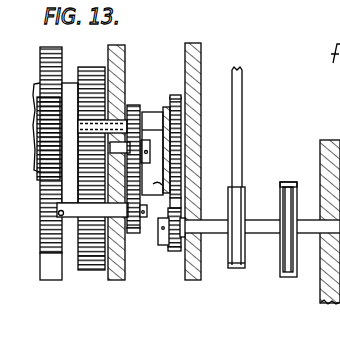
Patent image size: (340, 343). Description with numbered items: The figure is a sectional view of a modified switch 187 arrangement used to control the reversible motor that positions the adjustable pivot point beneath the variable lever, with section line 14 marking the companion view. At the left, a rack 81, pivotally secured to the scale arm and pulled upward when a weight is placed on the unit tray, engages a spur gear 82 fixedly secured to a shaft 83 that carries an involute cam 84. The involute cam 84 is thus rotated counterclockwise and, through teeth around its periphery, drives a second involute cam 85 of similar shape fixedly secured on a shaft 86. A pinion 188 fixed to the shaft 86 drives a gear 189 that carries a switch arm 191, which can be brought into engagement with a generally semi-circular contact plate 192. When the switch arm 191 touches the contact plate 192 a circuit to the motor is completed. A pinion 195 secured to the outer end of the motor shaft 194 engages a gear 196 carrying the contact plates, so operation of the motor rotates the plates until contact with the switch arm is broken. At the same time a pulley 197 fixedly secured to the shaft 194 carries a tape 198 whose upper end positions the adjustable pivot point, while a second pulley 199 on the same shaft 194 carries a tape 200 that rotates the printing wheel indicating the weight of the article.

The section line 14 is at (147, 97).
The rack 81 is at (47, 61).
The spur gear 82 is at (60, 110).
The shaft 83 is at (117, 122).
The involute cam 84 is at (92, 72).
The second involute cam 85 is at (94, 272).
The shaft 86 is at (72, 218).
The switch 187 is at (182, 100).
The pinion 188 is at (142, 229).
The gear 189 is at (143, 108).
The switch arm 191 is at (171, 113).
The contact plate 192 is at (178, 180).
The shaft of the motor 194 is at (262, 229).
The pinion 195 is at (190, 256).
The gear 196 is at (178, 103).
The pulley 197 is at (243, 193).
The tape 198 is at (243, 98).
The second pulley 199 is at (283, 214).
The tape 200 is at (287, 183).